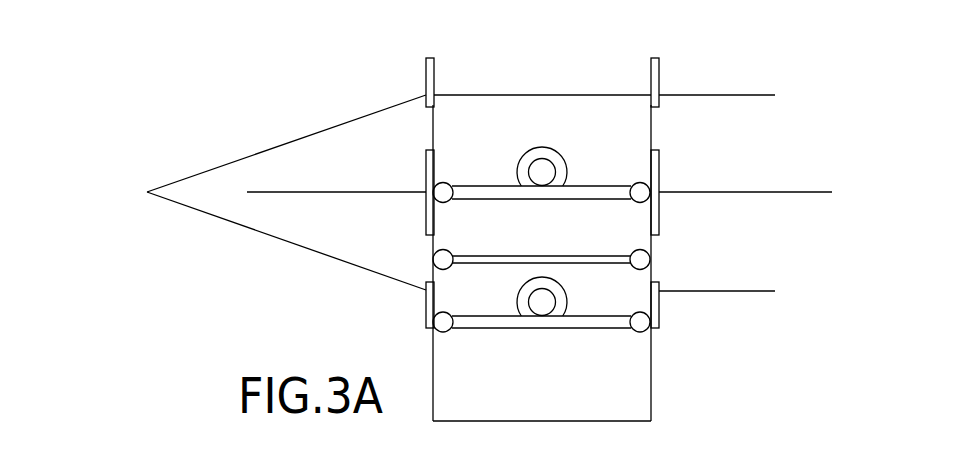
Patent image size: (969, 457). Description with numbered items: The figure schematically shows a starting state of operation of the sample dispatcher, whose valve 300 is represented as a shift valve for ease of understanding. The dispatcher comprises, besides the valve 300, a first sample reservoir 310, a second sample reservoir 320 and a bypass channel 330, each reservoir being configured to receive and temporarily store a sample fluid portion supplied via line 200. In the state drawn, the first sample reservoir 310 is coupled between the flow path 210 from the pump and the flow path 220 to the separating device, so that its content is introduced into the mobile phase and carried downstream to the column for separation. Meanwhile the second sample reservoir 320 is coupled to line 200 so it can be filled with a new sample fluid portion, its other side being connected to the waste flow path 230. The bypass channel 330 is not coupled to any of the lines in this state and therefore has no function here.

The sample fluid line 200 is at (136, 193).
The flow path from the pump 210 is at (236, 188).
The flow path to separating device 220 is at (770, 192).
The flow path to waste 230 is at (626, 193).
The valve 300 is at (602, 78).
The first sample reservoir 310 is at (580, 186).
The second sample reservoir 320 is at (580, 329).
The bypass channel 330 is at (530, 256).